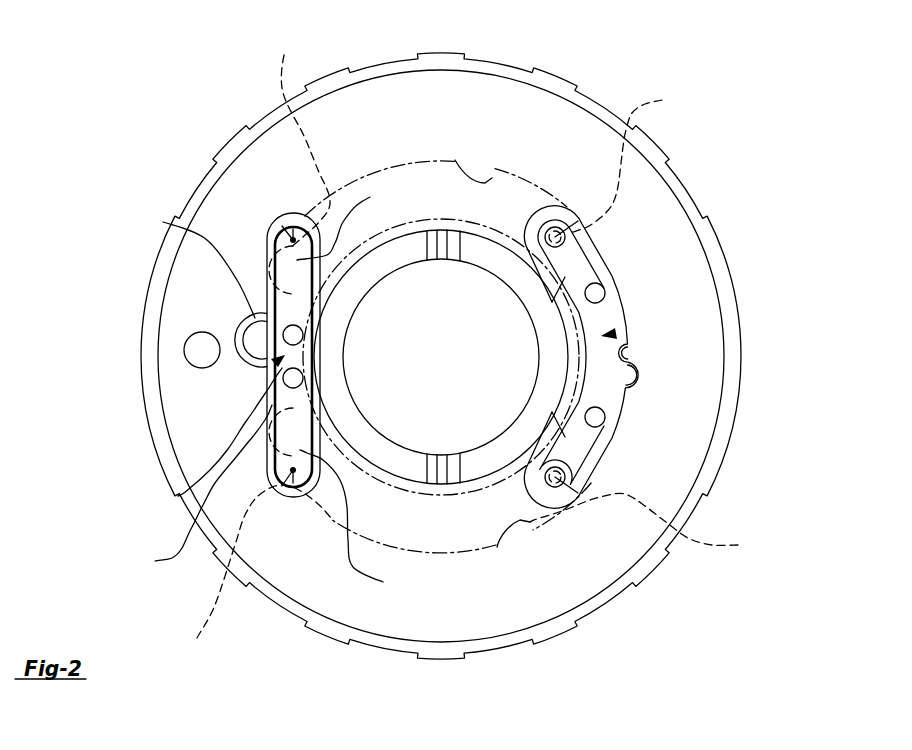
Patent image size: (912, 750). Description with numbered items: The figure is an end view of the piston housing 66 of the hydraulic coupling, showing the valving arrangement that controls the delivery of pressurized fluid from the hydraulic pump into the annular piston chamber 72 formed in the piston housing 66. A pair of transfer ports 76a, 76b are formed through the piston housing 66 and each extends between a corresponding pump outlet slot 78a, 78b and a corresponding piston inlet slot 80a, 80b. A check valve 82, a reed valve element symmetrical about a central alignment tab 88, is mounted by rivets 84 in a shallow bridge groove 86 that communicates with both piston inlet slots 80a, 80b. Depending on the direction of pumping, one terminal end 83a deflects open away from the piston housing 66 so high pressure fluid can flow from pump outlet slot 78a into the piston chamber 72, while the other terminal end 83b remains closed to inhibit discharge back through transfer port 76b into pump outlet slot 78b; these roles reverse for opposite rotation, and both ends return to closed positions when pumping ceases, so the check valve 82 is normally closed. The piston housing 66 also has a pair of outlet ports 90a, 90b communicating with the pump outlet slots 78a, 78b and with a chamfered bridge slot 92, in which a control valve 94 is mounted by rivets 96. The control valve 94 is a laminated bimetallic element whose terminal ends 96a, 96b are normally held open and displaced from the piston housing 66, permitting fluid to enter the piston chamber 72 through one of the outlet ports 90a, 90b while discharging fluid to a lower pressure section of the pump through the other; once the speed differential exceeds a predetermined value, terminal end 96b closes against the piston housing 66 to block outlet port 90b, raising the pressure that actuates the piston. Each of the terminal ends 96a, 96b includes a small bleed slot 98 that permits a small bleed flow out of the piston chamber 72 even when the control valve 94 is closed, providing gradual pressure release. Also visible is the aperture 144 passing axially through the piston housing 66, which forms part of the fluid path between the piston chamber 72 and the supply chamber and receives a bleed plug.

The piston housing 66 is at (580, 128).
The piston chamber 72 is at (457, 112).
The transfer port 76a is at (648, 521).
The transfer port 76b is at (633, 161).
The pump outlet slot 78a is at (522, 522).
The pump outlet slot 78b is at (483, 184).
The piston inlet slot 80a is at (560, 475).
The piston inlet slot 80b is at (608, 267).
The check valve 82 is at (615, 333).
The terminal end 83a is at (577, 450).
The terminal end 83b is at (577, 247).
The rivets 84 is at (600, 296).
The bridge groove 86 is at (621, 348).
The central alignment tab 88 is at (640, 375).
The outlet port 90a is at (248, 567).
The outlet port 90b is at (303, 139).
The bridge slot 92 is at (199, 489).
The control valve 94 is at (281, 360).
The rivets 96 is at (175, 221).
The terminal end 96a is at (356, 524).
The terminal end 96b is at (349, 221).
The bleed slot 98 is at (288, 223).
The aperture 144 is at (193, 357).